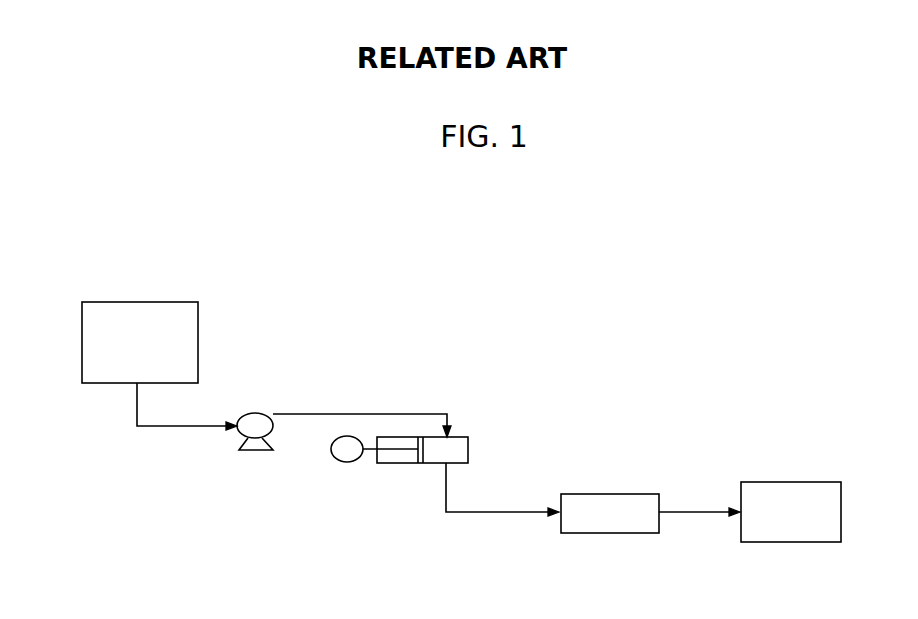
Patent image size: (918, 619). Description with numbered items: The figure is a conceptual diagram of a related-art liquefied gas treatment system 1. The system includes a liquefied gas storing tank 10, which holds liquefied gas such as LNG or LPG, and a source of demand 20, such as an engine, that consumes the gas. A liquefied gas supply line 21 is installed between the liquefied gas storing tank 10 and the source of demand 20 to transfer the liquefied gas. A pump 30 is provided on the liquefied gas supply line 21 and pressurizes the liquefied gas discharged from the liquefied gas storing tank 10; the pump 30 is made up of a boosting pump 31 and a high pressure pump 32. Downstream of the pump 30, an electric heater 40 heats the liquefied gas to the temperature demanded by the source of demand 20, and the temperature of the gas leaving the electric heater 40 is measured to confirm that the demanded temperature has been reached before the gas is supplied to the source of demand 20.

The liquefied gas treatment system 1 is at (677, 319).
The liquefied gas storing tank 10 is at (160, 302).
The source of demand 20 is at (799, 482).
The liquefied gas supply line 21 is at (170, 427).
The pump 30 is at (288, 352).
The boosting pump 31 is at (263, 418).
The high pressure pump 32 is at (405, 438).
The electric heater 40 is at (619, 494).